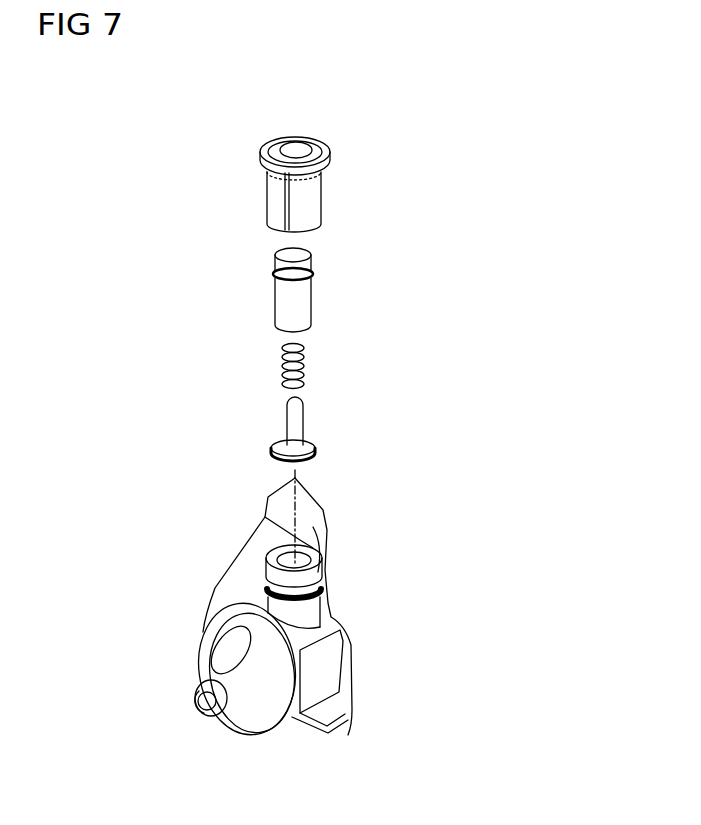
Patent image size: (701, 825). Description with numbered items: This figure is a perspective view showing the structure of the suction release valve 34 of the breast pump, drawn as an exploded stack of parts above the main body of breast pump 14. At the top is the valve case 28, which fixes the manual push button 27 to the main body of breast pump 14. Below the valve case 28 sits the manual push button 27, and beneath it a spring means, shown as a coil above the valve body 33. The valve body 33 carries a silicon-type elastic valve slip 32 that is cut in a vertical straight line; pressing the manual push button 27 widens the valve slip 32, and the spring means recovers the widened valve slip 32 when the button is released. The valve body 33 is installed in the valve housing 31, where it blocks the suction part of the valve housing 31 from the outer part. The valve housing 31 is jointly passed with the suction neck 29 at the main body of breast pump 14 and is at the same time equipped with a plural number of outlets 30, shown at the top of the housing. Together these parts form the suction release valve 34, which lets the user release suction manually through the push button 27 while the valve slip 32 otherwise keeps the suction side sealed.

The main body of breast pump 14 is at (240, 555).
The manual push button 27 is at (307, 305).
The valve case 28 is at (315, 203).
The suction neck 29 is at (202, 715).
The outlets 30 is at (335, 580).
The valve housing 31 is at (320, 612).
The valve slip 32 is at (281, 410).
The valve body 33 is at (302, 425).
The suction release valve 34 is at (445, 431).